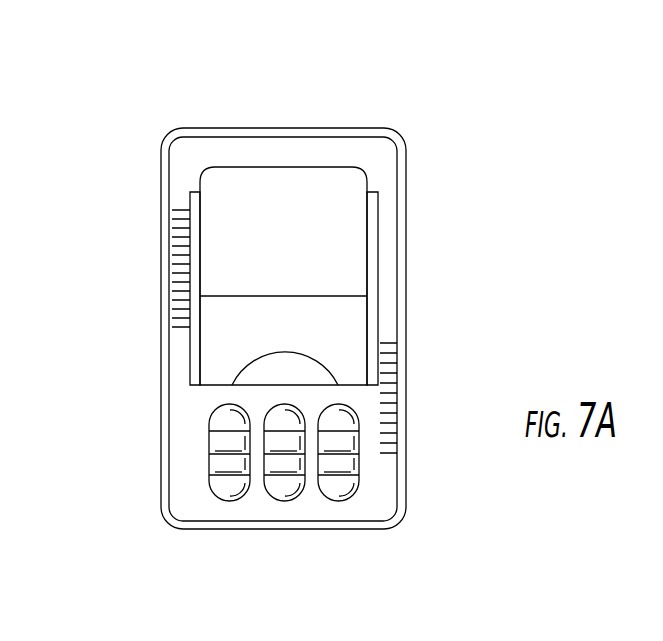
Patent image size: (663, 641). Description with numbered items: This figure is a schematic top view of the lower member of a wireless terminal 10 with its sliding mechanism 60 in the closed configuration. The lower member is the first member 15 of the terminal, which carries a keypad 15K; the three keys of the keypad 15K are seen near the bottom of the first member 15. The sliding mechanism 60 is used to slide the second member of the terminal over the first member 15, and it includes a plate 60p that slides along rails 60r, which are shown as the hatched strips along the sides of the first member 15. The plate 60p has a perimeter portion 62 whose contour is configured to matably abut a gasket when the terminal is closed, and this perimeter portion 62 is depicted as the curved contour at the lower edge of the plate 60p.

The wireless terminal 10 is at (436, 73).
The first member 15 is at (392, 298).
The keypad 15K is at (338, 473).
The sliding mechanism 60 is at (213, 332).
The rails 60r is at (193, 258).
The plate 60p is at (243, 323).
The perimeter portion 62 is at (260, 376).